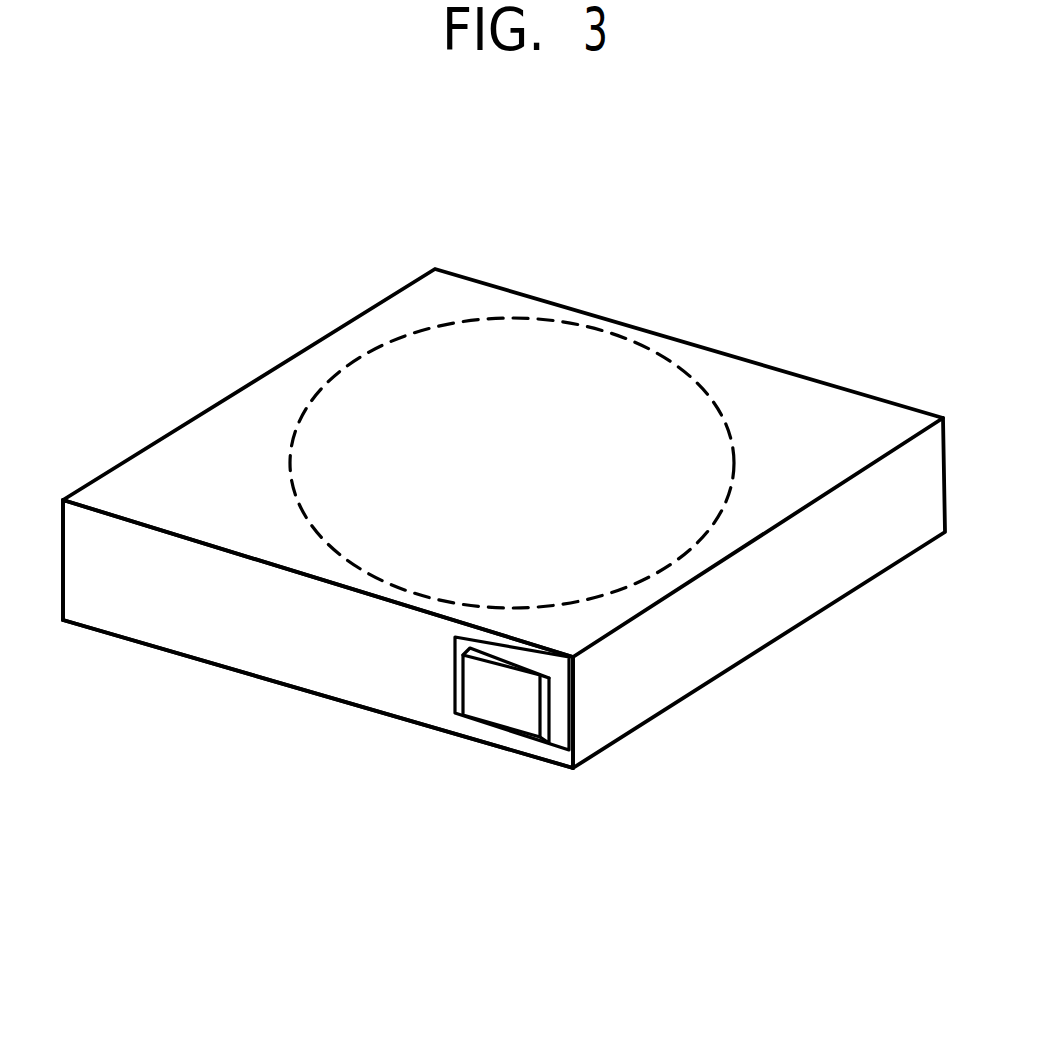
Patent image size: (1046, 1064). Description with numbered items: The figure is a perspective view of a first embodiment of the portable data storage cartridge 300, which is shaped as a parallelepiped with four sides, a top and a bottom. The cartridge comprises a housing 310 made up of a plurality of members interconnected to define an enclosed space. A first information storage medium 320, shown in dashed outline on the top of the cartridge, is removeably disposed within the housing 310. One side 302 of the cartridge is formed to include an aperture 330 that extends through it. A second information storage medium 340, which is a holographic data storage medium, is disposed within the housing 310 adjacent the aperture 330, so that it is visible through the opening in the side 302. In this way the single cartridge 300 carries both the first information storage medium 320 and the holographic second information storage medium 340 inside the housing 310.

The portable data storage cartridge 300 is at (664, 777).
The side 302 is at (282, 647).
The housing 310 is at (304, 698).
The first information storage medium 320 is at (527, 485).
The aperture 330 is at (547, 739).
The second information storage medium 340 is at (527, 712).